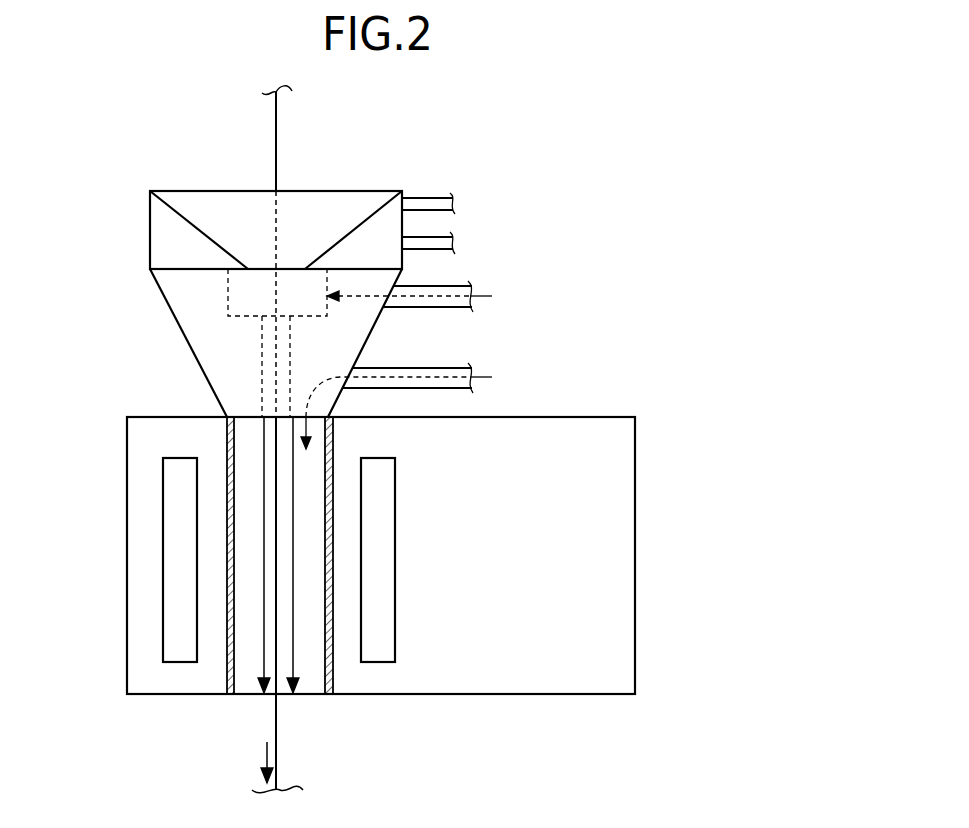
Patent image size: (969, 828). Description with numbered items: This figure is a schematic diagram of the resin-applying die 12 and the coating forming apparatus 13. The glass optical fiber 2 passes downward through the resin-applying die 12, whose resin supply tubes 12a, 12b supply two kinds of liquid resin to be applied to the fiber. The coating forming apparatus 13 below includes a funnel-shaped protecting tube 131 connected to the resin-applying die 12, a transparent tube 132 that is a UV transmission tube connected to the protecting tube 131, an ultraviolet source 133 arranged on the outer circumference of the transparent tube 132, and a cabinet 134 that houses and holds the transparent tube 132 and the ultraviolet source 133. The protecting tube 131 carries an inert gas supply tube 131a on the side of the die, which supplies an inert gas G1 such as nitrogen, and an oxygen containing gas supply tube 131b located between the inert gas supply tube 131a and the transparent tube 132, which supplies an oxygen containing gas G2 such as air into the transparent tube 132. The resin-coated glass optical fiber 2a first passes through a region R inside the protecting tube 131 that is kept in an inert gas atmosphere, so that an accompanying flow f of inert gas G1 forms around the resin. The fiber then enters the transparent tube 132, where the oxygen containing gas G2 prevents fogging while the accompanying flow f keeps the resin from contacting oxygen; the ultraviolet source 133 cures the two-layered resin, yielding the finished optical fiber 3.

The glass optical fiber 2 is at (276, 125).
The glass optical fiber 2a is at (262, 354).
The optical fiber 3 is at (280, 764).
The resin-applying die 12 is at (150, 208).
The resin supply tube 12a is at (455, 203).
The resin supply tube 12b is at (455, 243).
The coating forming apparatus 13 is at (347, 324).
The protecting tube 131 is at (178, 320).
The inert gas supply tube 131a is at (455, 290).
The oxygen containing gas supply tube 131b is at (455, 372).
The transparent tube 132 is at (226, 450).
The ultraviolet source 133 is at (163, 625).
The cabinet 134 is at (637, 555).
The inert gas G1 is at (487, 296).
The oxygen containing gas G2 is at (487, 377).
The region R is at (228, 286).
The accompanying flow f is at (262, 379).